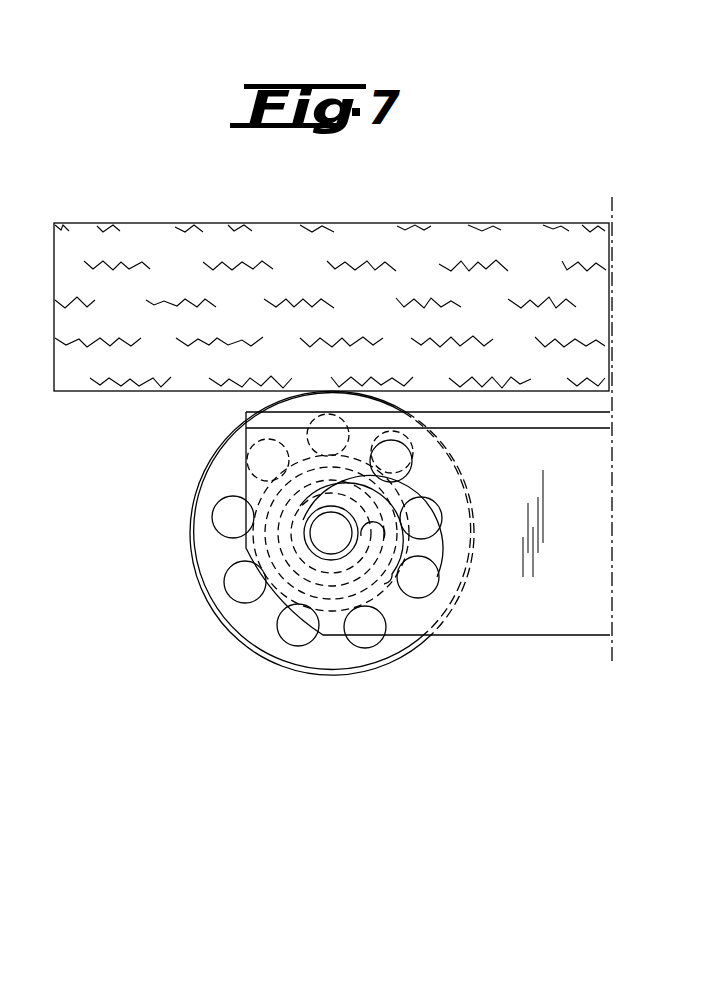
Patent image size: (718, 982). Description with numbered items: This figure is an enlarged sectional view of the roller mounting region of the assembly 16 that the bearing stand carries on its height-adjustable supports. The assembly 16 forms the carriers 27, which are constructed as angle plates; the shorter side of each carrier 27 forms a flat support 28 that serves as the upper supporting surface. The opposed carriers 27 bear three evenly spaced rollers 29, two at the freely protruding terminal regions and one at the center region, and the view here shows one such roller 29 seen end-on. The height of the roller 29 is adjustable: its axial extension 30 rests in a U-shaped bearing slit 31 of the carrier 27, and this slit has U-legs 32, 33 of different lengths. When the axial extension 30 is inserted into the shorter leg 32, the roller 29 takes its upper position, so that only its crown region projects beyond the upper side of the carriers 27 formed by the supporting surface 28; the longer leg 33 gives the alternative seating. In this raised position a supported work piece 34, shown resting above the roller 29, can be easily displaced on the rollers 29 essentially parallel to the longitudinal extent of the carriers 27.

The assembly 16 is at (627, 609).
The carrier 27 is at (563, 563).
The flat support 28 is at (550, 412).
The roller 29 is at (207, 602).
The axial extension 30 is at (331, 533).
The U-shaped bearing slit 31 is at (442, 577).
The shorter U-leg 32 is at (313, 496).
The longer U-leg 33 is at (440, 545).
The work piece 34 is at (458, 275).